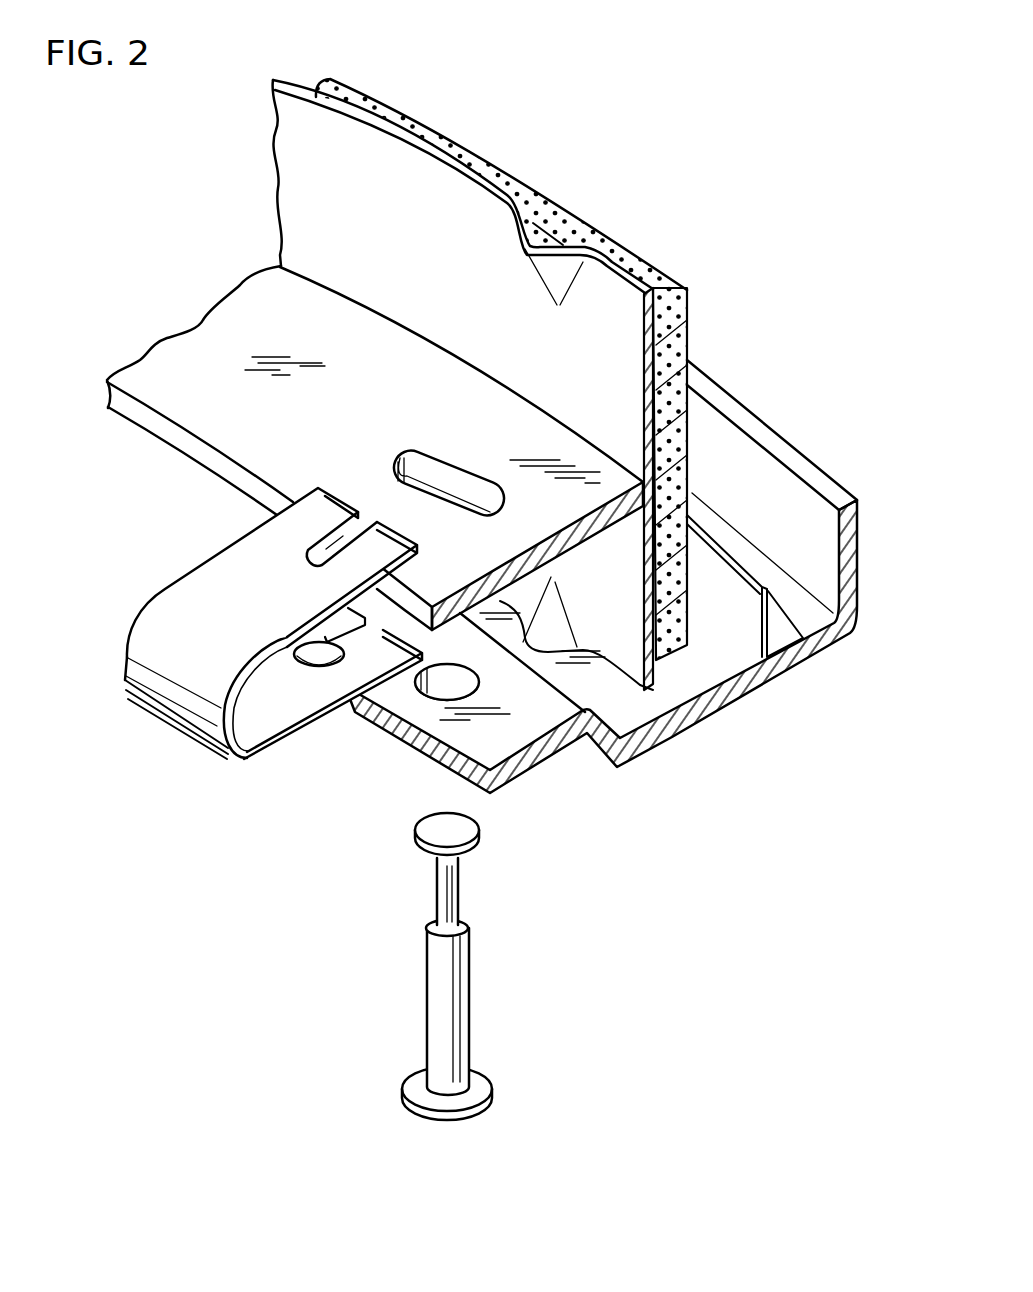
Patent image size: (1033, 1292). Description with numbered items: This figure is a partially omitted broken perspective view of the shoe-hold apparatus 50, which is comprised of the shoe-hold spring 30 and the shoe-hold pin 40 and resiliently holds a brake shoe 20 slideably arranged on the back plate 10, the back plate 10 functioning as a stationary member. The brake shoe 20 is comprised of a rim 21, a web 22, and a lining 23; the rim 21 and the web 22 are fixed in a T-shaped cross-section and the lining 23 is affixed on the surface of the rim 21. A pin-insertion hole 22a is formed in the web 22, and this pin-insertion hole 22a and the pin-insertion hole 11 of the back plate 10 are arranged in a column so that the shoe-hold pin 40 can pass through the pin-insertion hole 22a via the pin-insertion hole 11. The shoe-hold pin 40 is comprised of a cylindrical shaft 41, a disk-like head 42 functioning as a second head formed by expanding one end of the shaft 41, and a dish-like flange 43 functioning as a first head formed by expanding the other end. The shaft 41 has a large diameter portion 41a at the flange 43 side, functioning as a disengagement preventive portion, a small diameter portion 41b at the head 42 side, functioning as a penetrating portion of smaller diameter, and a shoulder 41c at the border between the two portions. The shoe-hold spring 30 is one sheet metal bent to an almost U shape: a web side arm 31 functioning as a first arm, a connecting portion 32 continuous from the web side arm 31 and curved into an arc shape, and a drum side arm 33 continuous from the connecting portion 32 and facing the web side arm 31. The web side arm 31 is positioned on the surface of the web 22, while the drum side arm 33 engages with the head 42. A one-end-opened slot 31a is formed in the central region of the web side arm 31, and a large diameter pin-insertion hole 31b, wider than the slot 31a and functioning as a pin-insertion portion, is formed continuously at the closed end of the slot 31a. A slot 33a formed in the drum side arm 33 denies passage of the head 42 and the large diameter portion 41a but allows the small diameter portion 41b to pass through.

The back plate 10 is at (601, 594).
The pin-insertion hole 11 is at (447, 684).
The brake shoe 20 is at (397, 345).
The rim 21 is at (297, 157).
The web 22 is at (375, 448).
The pin-insertion hole 22a is at (457, 477).
The lining 23 is at (557, 217).
The shoe-hold spring 30 is at (261, 750).
The web side arm 31 is at (323, 705).
The slot 31a is at (360, 636).
The large diameter pin-insertion hole 31b is at (330, 661).
The connecting portion 32 is at (122, 667).
The drum side arm 33 is at (272, 570).
The slot 33a is at (317, 553).
The shoe-hold pin 40 is at (390, 968).
The shaft 41 is at (528, 969).
The large diameter portion 41a is at (472, 1003).
The small diameter portion 41b is at (504, 885).
The shoulder 41c is at (468, 913).
The head 42 is at (480, 837).
The flange 43 is at (492, 1092).
The shoe-hold apparatus 50 is at (365, 813).